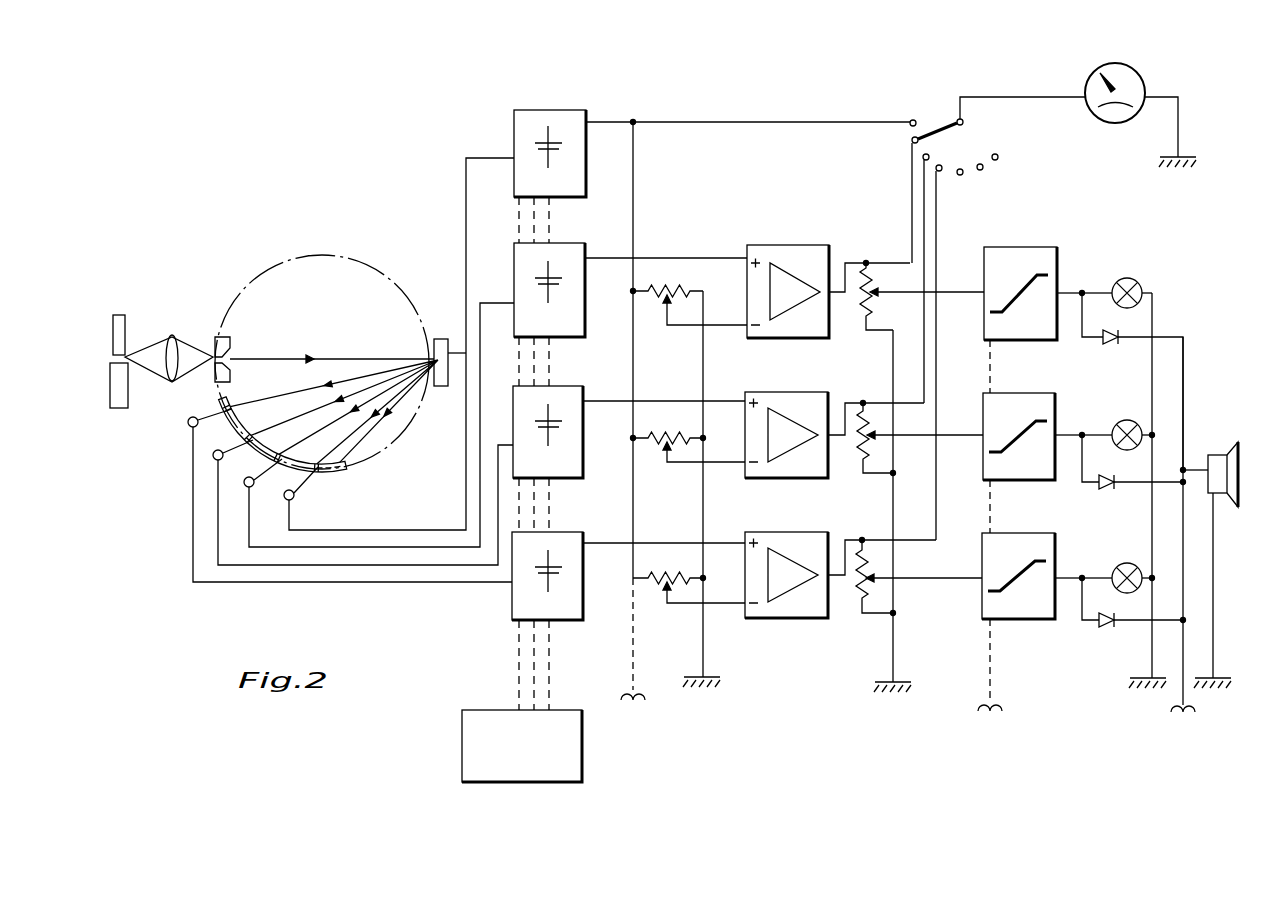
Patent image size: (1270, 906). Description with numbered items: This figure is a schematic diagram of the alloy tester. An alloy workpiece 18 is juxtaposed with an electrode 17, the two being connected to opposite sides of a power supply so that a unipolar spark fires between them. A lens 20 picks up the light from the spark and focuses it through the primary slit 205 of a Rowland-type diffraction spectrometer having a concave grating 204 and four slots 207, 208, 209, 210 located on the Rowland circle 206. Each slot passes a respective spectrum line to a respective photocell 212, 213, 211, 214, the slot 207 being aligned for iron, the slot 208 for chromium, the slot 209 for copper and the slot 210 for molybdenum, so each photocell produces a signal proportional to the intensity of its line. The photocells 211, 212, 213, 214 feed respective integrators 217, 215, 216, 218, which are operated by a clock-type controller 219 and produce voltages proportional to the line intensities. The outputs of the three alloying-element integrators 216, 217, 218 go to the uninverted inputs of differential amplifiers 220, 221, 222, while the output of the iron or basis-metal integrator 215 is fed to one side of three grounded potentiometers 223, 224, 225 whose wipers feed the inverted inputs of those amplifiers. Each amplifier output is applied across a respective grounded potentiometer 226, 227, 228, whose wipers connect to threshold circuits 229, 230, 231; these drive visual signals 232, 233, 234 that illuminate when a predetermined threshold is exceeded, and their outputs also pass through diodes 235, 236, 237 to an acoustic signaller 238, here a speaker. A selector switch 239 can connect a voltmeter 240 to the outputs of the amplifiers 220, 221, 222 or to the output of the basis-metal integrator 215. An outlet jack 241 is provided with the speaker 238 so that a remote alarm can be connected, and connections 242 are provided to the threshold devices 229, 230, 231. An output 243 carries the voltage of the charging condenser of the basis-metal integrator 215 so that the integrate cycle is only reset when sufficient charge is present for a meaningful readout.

The electrode 17 is at (120, 315).
The alloy workpiece 18 is at (122, 392).
The lens 20 is at (173, 333).
The concave grating 204 is at (437, 339).
The primary slit 205 is at (232, 340).
The Rowland circle 206 is at (340, 465).
The slot 207 is at (318, 472).
The slot 208 is at (282, 463).
The slot 209 is at (252, 443).
The slot 210 is at (226, 416).
The photocell 211 is at (213, 456).
The photocell 212 is at (293, 499).
The photocell 213 is at (245, 485).
The photocell 214 is at (189, 425).
The basis-metal integrator 215 is at (578, 177).
The integrator 216 is at (573, 323).
The integrator 217 is at (575, 460).
The integrator 218 is at (575, 592).
The clock-type controller 219 is at (560, 717).
The differential amplifier 220 is at (812, 253).
The differential amplifier 221 is at (808, 402).
The differential amplifier 222 is at (822, 540).
The potentiometer 223 is at (668, 281).
The potentiometer 224 is at (668, 430).
The potentiometer 225 is at (668, 568).
The potentiometer 226 is at (862, 313).
The potentiometer 227 is at (860, 453).
The potentiometer 228 is at (858, 597).
The threshold circuit 229 is at (1030, 265).
The threshold circuit 230 is at (1030, 415).
The threshold circuit 231 is at (1030, 548).
The visual signal 232 is at (1128, 275).
The visual signal 233 is at (1128, 417).
The visual signal 234 is at (1128, 565).
The diode 235 is at (1110, 340).
The diode 236 is at (1110, 489).
The diode 237 is at (1107, 628).
The acoustic signaller 238 is at (1222, 458).
The selector switch 239 is at (958, 150).
The voltmeter 240 is at (1113, 117).
The outlet jack 241 is at (1200, 541).
The connections 242 is at (1000, 684).
The output 243 is at (643, 658).